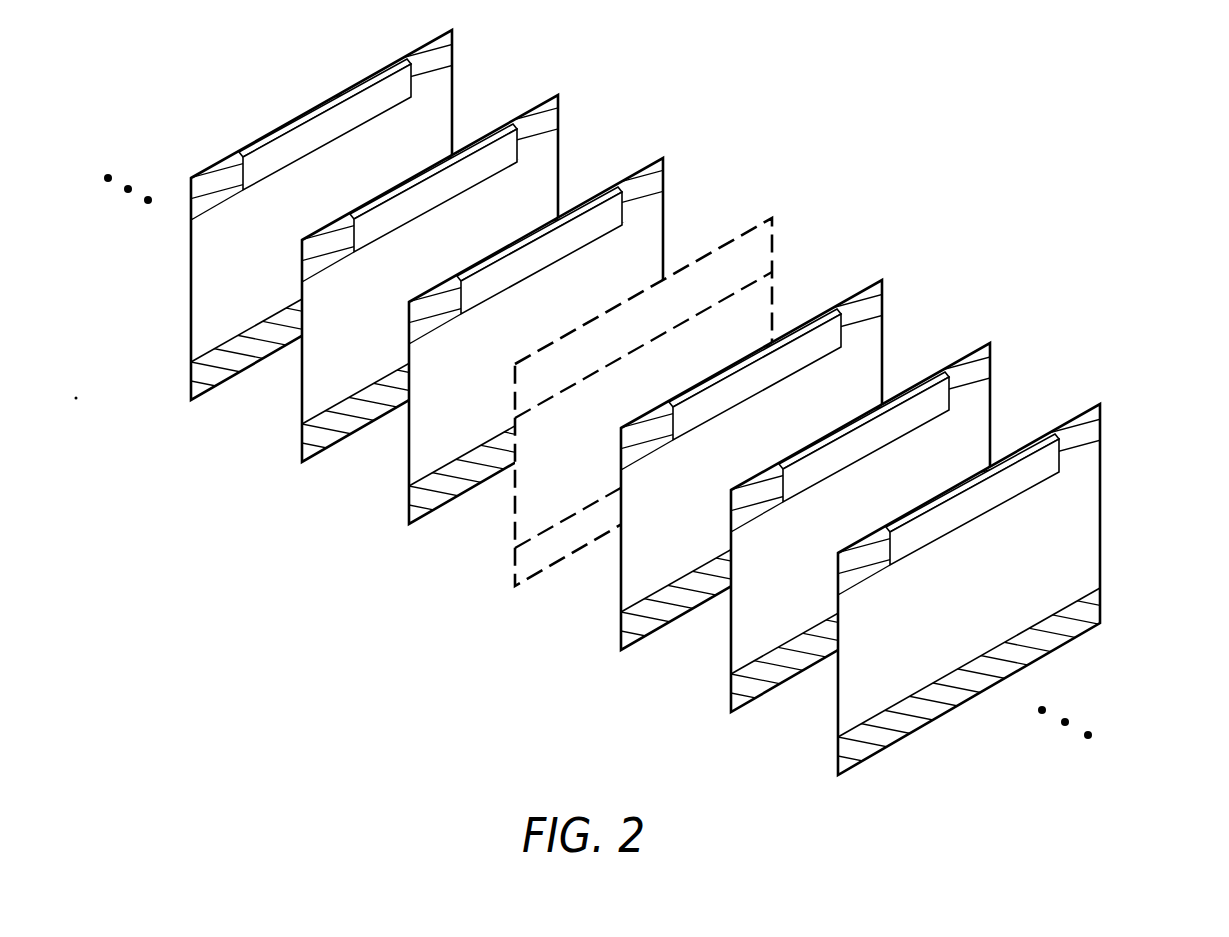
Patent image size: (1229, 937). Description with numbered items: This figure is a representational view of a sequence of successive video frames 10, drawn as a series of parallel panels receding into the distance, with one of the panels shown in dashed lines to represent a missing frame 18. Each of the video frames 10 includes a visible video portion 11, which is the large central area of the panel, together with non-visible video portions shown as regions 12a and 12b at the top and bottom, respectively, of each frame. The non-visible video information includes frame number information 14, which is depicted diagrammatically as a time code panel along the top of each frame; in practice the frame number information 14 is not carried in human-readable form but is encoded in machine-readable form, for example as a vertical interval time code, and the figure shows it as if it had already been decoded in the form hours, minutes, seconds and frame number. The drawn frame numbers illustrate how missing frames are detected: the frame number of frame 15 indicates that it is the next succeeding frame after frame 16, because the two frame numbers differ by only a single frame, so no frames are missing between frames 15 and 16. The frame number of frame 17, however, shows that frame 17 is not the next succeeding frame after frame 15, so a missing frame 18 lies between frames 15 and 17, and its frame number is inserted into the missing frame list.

The video frames 10 is at (576, 126).
The visible video portion 11 is at (1085, 538).
The non-visible video region at top 12a is at (1097, 448).
The non-visible video region at bottom 12b is at (1097, 620).
The frame number information 14 is at (1043, 442).
The frame 15 is at (664, 628).
The frame 16 is at (770, 691).
The frame 17 is at (432, 513).
The missing frame 18 is at (541, 562).